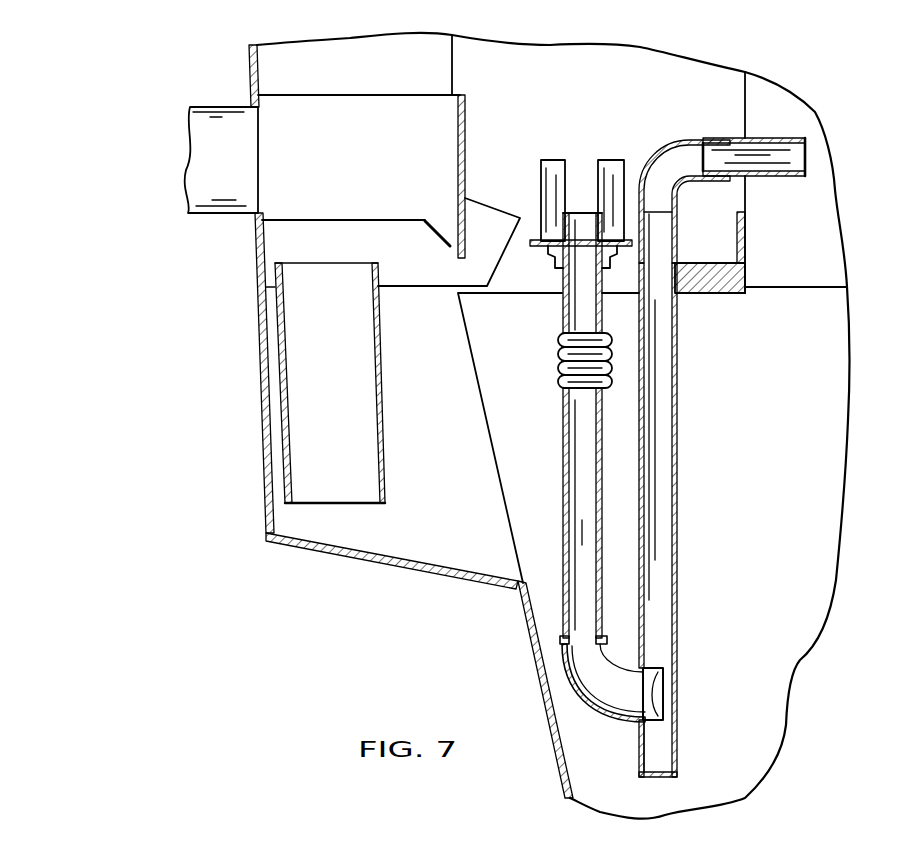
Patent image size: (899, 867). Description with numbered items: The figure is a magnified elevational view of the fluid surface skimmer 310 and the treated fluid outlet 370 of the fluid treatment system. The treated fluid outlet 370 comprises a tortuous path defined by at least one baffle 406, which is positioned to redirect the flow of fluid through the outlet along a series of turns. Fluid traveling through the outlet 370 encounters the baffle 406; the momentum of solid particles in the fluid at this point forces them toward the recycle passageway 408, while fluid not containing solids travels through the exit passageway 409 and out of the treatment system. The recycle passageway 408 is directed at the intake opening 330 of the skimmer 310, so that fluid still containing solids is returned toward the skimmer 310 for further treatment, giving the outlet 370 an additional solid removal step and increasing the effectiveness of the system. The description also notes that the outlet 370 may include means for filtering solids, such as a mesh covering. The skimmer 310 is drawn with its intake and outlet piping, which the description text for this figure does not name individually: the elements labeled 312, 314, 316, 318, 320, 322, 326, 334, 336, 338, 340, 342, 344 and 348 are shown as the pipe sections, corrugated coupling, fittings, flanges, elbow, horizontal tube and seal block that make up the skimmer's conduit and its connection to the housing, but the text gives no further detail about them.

The skimmer 310 is at (716, 520).
The conduit pipe 312 is at (556, 443).
The return pipe 314 is at (680, 402).
The upper pipe section 316 is at (562, 311).
The pipe wall 318 is at (567, 498).
The bellows 320 is at (558, 362).
The nut 322 is at (540, 247).
The mounting tubes 326 is at (548, 160).
The intake opening 330 is at (583, 212).
The elbow outlet fitting 334 is at (633, 667).
The inner tube 336 is at (678, 249).
The pipe bottom 338 is at (680, 732).
The horizontal tube 340 is at (765, 138).
The elbow pipe 342 is at (690, 140).
The flange gasket 344 is at (538, 247).
The seal block 348 is at (745, 250).
The treated fluid outlet 370 is at (252, 377).
The baffle 406 is at (428, 263).
The recycle passageway 408 is at (486, 218).
The exit passageway 409 is at (455, 247).